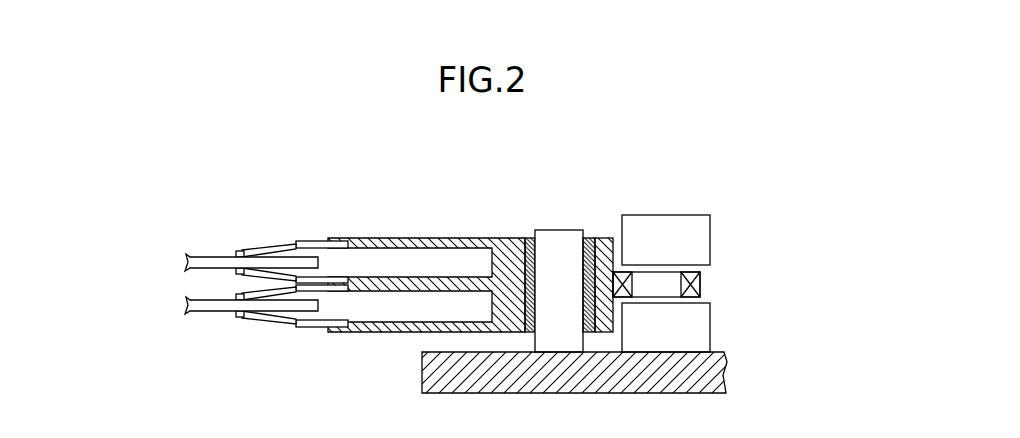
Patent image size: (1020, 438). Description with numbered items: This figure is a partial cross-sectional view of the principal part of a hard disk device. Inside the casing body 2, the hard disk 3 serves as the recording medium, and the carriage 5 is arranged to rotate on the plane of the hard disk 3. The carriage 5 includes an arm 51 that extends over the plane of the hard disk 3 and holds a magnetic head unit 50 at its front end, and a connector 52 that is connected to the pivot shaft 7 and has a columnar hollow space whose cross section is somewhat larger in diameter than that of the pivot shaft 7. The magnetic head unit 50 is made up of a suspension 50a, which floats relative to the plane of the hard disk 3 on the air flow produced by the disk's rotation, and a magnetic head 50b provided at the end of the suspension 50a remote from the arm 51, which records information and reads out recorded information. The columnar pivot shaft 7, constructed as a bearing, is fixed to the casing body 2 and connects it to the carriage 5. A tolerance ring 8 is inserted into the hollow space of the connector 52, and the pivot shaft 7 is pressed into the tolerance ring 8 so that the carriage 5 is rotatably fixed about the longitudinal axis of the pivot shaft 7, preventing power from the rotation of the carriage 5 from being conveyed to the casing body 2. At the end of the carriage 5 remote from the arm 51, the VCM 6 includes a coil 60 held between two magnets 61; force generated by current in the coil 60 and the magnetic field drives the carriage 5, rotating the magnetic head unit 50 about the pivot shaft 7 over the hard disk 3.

The casing body 2 is at (651, 393).
The hard disk 3 is at (200, 257).
The carriage 5 is at (451, 234).
The VCM 6 is at (750, 314).
The pivot shaft 7 is at (557, 230).
The tolerance ring 8 is at (531, 238).
The magnetic head unit 50 is at (202, 193).
The suspension 50a is at (276, 249).
The magnetic head 50b is at (240, 256).
The arm 51 is at (410, 278).
The connector 52 is at (585, 238).
The coil 60 is at (700, 287).
The magnets 61 is at (710, 241).